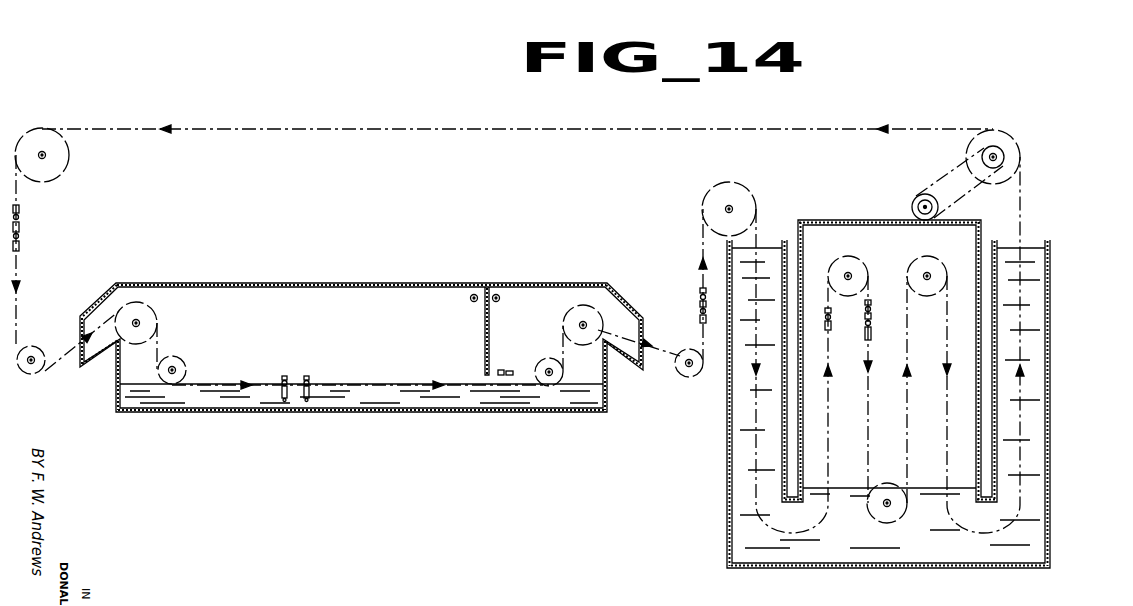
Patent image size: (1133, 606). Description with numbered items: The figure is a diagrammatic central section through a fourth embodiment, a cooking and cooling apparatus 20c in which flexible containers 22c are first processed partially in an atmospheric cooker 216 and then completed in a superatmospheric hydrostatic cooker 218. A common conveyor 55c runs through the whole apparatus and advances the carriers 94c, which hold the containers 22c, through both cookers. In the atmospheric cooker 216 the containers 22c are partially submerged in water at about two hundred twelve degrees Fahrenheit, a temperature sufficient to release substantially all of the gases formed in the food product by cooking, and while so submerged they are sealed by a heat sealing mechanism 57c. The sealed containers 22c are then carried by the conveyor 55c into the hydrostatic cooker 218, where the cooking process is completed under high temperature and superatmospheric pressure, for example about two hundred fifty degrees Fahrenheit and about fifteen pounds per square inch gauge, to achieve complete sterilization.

The common conveyor 55c is at (170, 128).
The cooking and cooling apparatus 20c is at (330, 106).
The atmospheric cooker 216 is at (300, 284).
The flexible containers 22c is at (307, 377).
The carriers 94c is at (307, 401).
The heat sealing mechanism 57c is at (505, 368).
The hydrostatic cooker 218 is at (866, 219).